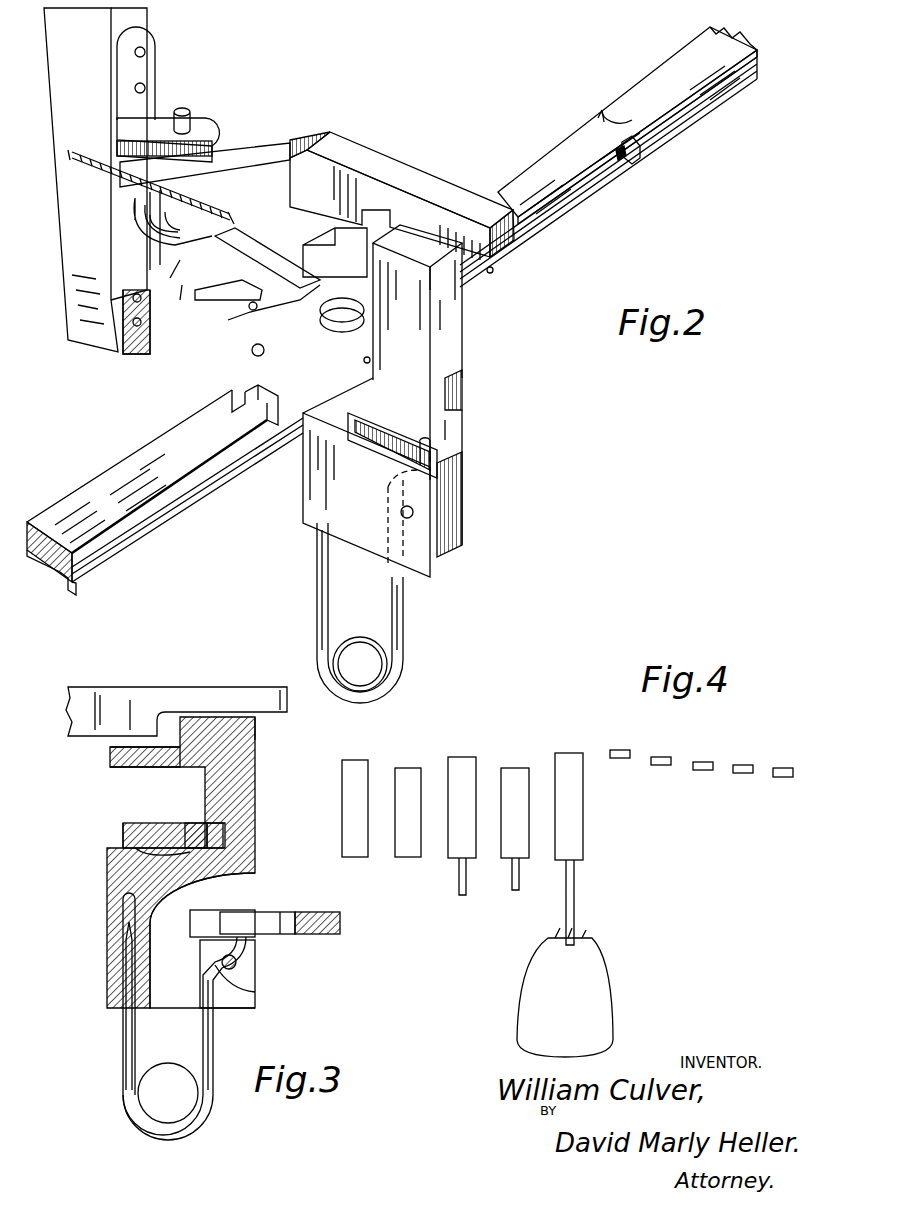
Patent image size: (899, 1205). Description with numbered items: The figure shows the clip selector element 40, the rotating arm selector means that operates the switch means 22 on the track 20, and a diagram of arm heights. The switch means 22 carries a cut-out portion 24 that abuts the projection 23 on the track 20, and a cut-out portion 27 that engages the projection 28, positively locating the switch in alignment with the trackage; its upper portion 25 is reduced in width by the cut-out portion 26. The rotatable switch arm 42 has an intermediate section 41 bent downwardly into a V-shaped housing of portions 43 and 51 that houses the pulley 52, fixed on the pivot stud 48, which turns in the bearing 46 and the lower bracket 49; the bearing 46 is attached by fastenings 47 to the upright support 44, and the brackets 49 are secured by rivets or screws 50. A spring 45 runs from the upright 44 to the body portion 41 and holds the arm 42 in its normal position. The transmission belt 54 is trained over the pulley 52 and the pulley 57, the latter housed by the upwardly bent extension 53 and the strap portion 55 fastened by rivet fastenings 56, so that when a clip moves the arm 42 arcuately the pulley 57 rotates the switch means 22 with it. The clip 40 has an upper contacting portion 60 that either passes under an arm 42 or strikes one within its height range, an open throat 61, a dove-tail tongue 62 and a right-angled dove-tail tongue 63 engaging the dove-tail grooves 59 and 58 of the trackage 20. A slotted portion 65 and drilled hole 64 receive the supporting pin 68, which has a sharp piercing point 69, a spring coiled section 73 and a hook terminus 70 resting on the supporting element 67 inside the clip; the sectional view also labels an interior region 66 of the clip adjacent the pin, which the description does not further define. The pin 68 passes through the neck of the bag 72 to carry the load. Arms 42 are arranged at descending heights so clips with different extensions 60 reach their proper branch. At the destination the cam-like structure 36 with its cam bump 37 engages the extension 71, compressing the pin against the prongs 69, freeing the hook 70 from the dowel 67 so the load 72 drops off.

In FIG. 2, the track 20 is at (103, 463).
In FIG. 3, the track 20 is at (112, 837).
In FIG. 2, the switch means 22 is at (543, 160).
In FIG. 2, the projection 23 is at (240, 372).
In FIG. 2, the cut-out portion 24 is at (262, 382).
In FIG. 2, the upper portion 25 is at (606, 112).
In FIG. 2, the cut-out portion 26 is at (582, 128).
In FIG. 2, the cut-out portion 27 is at (640, 150).
In FIG. 2, the projection 28 is at (630, 154).
In FIG. 3, the cam-like structure 36 is at (342, 921).
In FIG. 3, the cam bump 37 is at (270, 915).
In FIG. 2, the clip selector element 40 is at (447, 328).
In FIG. 3, the clip selector element 40 is at (248, 792).
In FIG. 4, the clip selector element 40 is at (358, 766).
In FIG. 2, the intermediate section 41 is at (350, 183).
In FIG. 3, the intermediate section 41 is at (136, 690).
In FIG. 2, the rotatable switch arm 42 is at (440, 212).
In FIG. 3, the rotatable switch arm 42 is at (228, 695).
In FIG. 4, the rotatable switch arm 42 is at (620, 750).
In FIG. 2, the housing portion 43 is at (187, 177).
In FIG. 2, the upright support 44 is at (62, 92).
In FIG. 2, the spring 45 is at (95, 170).
In FIG. 2, the bearing 46 is at (150, 118).
In FIG. 2, the fastenings 47 is at (146, 52).
In FIG. 2, the pivot stud 48 is at (190, 112).
In FIG. 2, the lower bracket 49 is at (120, 318).
In FIG. 2, the rivets or screws 50 is at (133, 296).
In FIG. 2, the housing portion 51 is at (180, 284).
In FIG. 2, the pulley 52 is at (135, 214).
In FIG. 2, the extension 53 is at (292, 298).
In FIG. 2, the transmission belt 54 is at (242, 296).
In FIG. 2, the strap portion 55 is at (252, 310).
In FIG. 2, the rivet fastenings 56 is at (252, 354).
In FIG. 2, the pulley 57 is at (366, 316).
In FIG. 2, the dove-tail groove 58 is at (62, 562).
In FIG. 3, the dove-tail groove 58 is at (158, 825).
In FIG. 2, the dove-tail groove 59 is at (82, 568).
In FIG. 3, the dove-tail groove 59 is at (186, 823).
In FIG. 2, the upper contacting portion 60 is at (478, 283).
In FIG. 3, the upper contacting portion 60 is at (255, 726).
In FIG. 2, the open throat 61 is at (422, 268).
In FIG. 3, the open throat 61 is at (115, 765).
In FIG. 2, the dove-tail tongue 62 is at (492, 270).
In FIG. 3, the dove-tail tongue 62 is at (224, 836).
In FIG. 3, the dove-tail tongue 63 is at (145, 852).
In FIG. 3, the drilled hole 64 is at (126, 905).
In FIG. 2, the slotted portion 65 is at (460, 392).
In FIG. 3, the slotted portion 65 is at (240, 880).
In FIG. 3, the cavity 66 is at (200, 925).
In FIG. 2, the supporting element 67 is at (414, 512).
In FIG. 3, the supporting element 67 is at (237, 962).
In FIG. 2, the supporting pin 68 is at (311, 571).
In FIG. 3, the supporting pin 68 is at (214, 1108).
In FIG. 4, the supporting pin 68 is at (575, 875).
In FIG. 3, the piercing point 69 is at (127, 934).
In FIG. 2, the hook terminus 70 is at (385, 489).
In FIG. 3, the hook terminus 70 is at (240, 985).
In FIG. 2, the extension 71 is at (432, 452).
In FIG. 3, the extension 71 is at (250, 912).
In FIG. 4, the bag 72 is at (592, 978).
In FIG. 2, the spring coiled section 73 is at (365, 648).
In FIG. 3, the spring coiled section 73 is at (135, 1112).